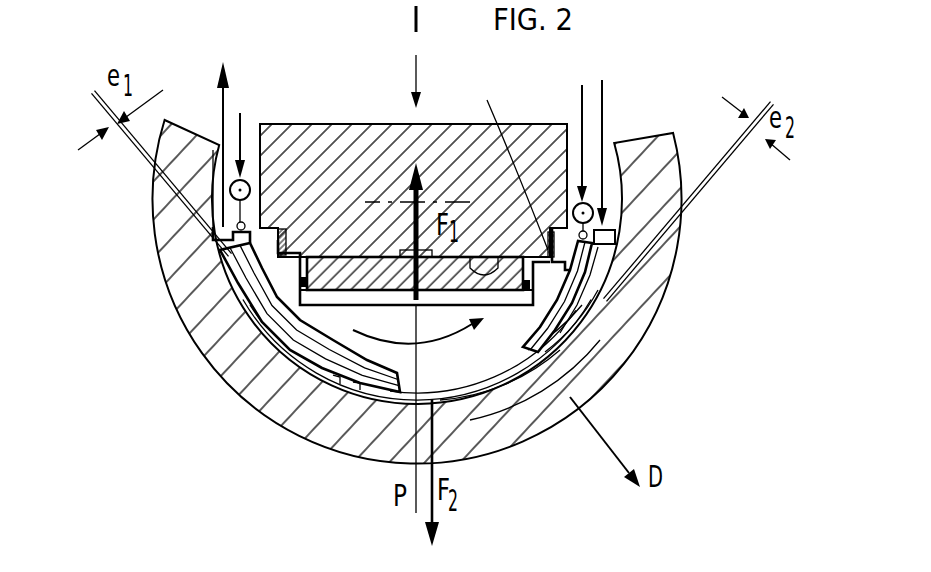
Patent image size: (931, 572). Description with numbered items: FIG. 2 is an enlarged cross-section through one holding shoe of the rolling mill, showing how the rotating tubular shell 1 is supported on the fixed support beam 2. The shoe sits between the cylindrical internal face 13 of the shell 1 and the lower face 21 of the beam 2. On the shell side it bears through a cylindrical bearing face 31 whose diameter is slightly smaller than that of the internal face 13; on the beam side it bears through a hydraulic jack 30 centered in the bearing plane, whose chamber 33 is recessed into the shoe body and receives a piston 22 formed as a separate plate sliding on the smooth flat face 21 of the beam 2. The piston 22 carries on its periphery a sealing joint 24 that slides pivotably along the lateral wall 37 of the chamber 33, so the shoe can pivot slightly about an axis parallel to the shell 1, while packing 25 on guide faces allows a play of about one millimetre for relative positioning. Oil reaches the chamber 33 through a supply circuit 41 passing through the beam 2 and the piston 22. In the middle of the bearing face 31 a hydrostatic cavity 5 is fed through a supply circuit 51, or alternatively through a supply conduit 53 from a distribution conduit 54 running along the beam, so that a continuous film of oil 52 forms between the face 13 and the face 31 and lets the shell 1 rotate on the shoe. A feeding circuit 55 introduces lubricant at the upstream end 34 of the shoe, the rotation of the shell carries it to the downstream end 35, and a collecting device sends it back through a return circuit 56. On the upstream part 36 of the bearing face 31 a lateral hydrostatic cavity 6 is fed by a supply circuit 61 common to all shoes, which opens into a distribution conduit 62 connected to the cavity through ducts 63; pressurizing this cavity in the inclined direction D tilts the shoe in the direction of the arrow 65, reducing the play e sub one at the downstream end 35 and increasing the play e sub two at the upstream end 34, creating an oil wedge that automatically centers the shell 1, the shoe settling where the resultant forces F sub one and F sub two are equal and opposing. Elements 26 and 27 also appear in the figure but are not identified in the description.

The tubular shell 1 is at (473, 440).
The support beam 2 is at (340, 147).
The hydrostatic cavity 5 is at (357, 387).
The lateral hydrostatic cavity 6 is at (548, 427).
The cylindrical internal face 13 is at (617, 353).
The lower face of the support beam 21 is at (298, 127).
The piston 22 is at (537, 427).
The sealing joint 24 is at (280, 347).
The packing 25 is at (502, 168).
The block top face 26 is at (548, 120).
The notch 27 is at (482, 257).
The hydraulic jack 30 is at (342, 295).
The cylindrical bearing face 31 is at (620, 298).
The chamber 33 is at (328, 298).
The upstream end of the shoe 34 is at (605, 244).
The downstream end of the shoe 35 is at (223, 242).
The upstream part of the bearing face 36 is at (610, 322).
The lateral wall of the chamber 37 is at (300, 388).
The supply circuit 41 is at (414, 157).
The supply circuit 51 is at (243, 127).
The film of oil 52 is at (253, 303).
The supply conduit 53 is at (257, 280).
The distribution conduit 54 is at (230, 191).
The feeding circuit 55 is at (603, 107).
The return circuit 56 is at (221, 93).
The supply circuit 61 is at (581, 107).
The distribution conduit 62 is at (697, 199).
The ducts 63 is at (630, 272).
The arrow 65 is at (487, 300).